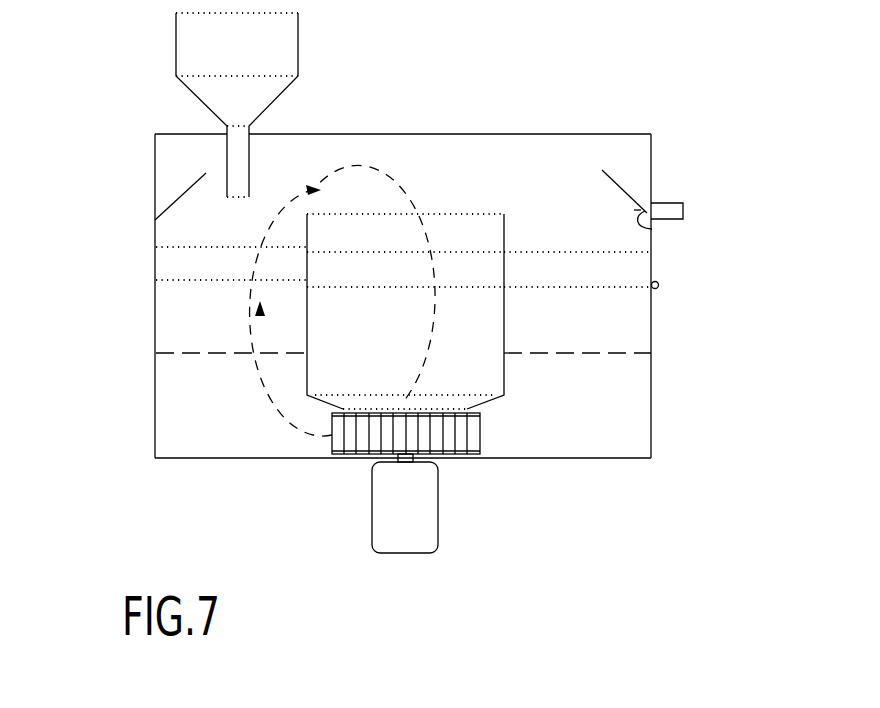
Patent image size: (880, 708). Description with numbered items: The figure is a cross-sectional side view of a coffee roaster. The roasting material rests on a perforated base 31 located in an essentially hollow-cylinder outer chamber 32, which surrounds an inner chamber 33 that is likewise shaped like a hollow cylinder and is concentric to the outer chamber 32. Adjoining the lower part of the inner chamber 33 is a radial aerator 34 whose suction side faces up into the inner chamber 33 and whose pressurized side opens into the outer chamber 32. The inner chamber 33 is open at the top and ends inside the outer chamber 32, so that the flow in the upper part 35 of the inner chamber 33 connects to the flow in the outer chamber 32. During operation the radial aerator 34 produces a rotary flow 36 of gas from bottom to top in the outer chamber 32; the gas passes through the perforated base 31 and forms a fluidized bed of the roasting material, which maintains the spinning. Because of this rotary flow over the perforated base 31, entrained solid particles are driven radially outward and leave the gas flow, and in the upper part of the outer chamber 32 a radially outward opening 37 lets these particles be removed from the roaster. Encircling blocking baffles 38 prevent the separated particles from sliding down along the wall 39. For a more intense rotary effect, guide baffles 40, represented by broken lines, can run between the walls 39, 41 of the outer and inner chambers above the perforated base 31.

The perforated base 31 is at (205, 355).
The outer chamber 32 is at (637, 333).
The inner chamber 33 is at (488, 313).
The radial aerator 34 is at (463, 490).
The upper part of the inner chamber 35 is at (410, 222).
The rotary flow 36 is at (260, 281).
The radially outward opening 37 is at (685, 208).
The blocking baffles 38 is at (652, 229).
The wall of the outer chamber 39 is at (155, 337).
The guide baffles 40 is at (165, 267).
The wall of the inner chamber 41 is at (307, 372).